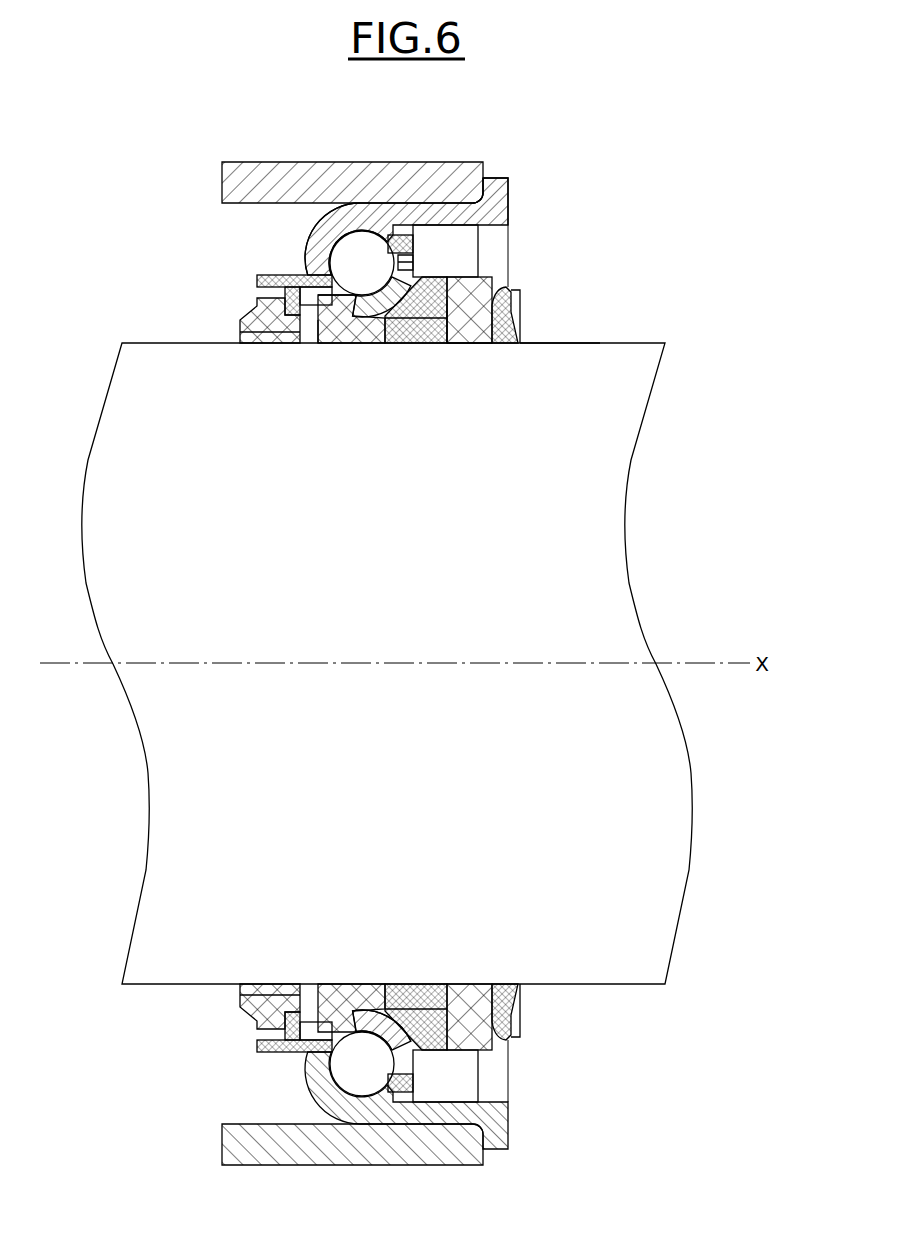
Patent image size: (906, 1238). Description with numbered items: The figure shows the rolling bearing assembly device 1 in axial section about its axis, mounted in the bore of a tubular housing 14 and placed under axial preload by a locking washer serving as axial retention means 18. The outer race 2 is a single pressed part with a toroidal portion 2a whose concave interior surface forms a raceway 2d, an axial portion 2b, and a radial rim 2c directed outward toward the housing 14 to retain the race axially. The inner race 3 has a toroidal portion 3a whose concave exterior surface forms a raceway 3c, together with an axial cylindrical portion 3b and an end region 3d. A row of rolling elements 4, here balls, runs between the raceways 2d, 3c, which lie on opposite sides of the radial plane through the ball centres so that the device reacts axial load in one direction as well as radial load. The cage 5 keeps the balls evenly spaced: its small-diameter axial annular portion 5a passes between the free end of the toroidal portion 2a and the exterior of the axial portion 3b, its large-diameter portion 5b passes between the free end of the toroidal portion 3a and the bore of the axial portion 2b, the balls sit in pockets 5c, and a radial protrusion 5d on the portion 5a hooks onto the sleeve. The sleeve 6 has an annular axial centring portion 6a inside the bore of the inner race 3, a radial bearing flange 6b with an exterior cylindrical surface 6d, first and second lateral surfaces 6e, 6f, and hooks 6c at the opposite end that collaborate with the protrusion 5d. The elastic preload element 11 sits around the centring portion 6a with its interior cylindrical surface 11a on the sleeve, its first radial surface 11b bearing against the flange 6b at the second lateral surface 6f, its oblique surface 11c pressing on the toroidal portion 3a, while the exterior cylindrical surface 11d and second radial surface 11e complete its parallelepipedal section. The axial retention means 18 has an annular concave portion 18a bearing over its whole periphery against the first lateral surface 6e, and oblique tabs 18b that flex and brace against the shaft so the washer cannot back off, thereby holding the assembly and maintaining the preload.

The rolling bearing assembly device 1 is at (404, 257).
The outer race 2 is at (406, 189).
The toroidal portion 2a is at (318, 199).
The axial portion 2b is at (469, 164).
The radial rim 2c is at (495, 174).
The raceway 2d is at (351, 199).
The inner race 3 is at (373, 309).
The toroidal portion 3a is at (383, 344).
The axial cylindrical portion 3b is at (351, 353).
The raceway 3c is at (350, 353).
The inner ring end face 3d is at (262, 346).
The rolling elements 4 is at (362, 263).
The cage 5 is at (319, 219).
The axial annular portion of small diameter 5a is at (269, 258).
The axial annular portion of large diameter 5b is at (418, 196).
The pockets 5c is at (383, 188).
The radial protrusion 5d is at (265, 293).
The sleeve 6 is at (386, 318).
The annular axial centring portion 6a is at (416, 344).
The radial bearing flange 6b is at (510, 297).
The hooks 6c is at (247, 320).
The exterior cylindrical surface 6d is at (509, 284).
The first lateral surface 6e is at (506, 349).
The second lateral surface 6f is at (469, 377).
The elastic preload element 11 is at (452, 1017).
The interior cylindrical axial surface 11a is at (416, 991).
The first radial surface 11b is at (420, 1112).
The oblique surface 11c is at (374, 1122).
The exterior cylindrical axial surface 11d is at (398, 1112).
The second radial surface 11e is at (354, 982).
The tubular housing 14 is at (329, 182).
The axial retention means 18 is at (387, 687).
The annular concave portion 18a is at (562, 312).
The oblique tabs 18b is at (560, 377).